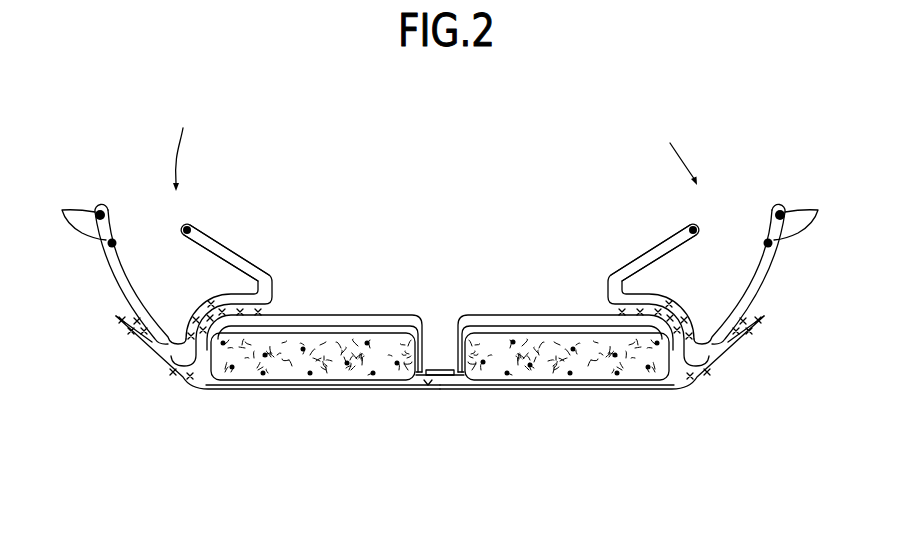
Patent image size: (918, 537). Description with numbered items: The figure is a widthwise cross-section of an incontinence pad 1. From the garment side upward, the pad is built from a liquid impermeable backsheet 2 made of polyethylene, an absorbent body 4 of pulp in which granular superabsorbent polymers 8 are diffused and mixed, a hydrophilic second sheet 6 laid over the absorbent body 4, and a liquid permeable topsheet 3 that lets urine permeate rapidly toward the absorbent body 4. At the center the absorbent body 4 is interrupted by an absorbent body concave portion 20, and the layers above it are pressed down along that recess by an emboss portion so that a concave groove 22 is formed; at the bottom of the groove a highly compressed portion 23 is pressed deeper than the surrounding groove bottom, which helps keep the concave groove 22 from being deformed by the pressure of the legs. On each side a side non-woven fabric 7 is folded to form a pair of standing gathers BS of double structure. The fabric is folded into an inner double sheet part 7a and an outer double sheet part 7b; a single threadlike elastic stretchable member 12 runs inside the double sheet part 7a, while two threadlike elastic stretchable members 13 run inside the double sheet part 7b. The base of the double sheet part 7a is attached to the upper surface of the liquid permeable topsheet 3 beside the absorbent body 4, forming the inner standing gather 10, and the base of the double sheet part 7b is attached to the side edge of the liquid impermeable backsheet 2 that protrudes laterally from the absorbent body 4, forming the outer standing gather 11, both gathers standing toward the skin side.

The incontinence pad 1 is at (541, 185).
The liquid impermeable backsheet 2 is at (598, 391).
The liquid permeable topsheet 3 is at (538, 314).
The absorbent body 4 is at (279, 366).
The hydrophilic second sheet 6 is at (371, 326).
The side non-woven fabric 7 is at (121, 297).
The double sheet part 7a is at (249, 262).
The double sheet part 7b is at (108, 265).
The superabsorbent polymers 8 is at (346, 365).
The inner standing gather 10 is at (228, 235).
The outer standing gather 11 is at (112, 205).
The threadlike elastic stretchable member 12 is at (181, 231).
The threadlike elastic stretchable members 13 is at (442, 215).
The absorbent body concave portion 20 is at (422, 348).
The concave groove 22 is at (464, 321).
The highly compressed portion 23 is at (426, 386).
The standing gathers BS is at (202, 121).